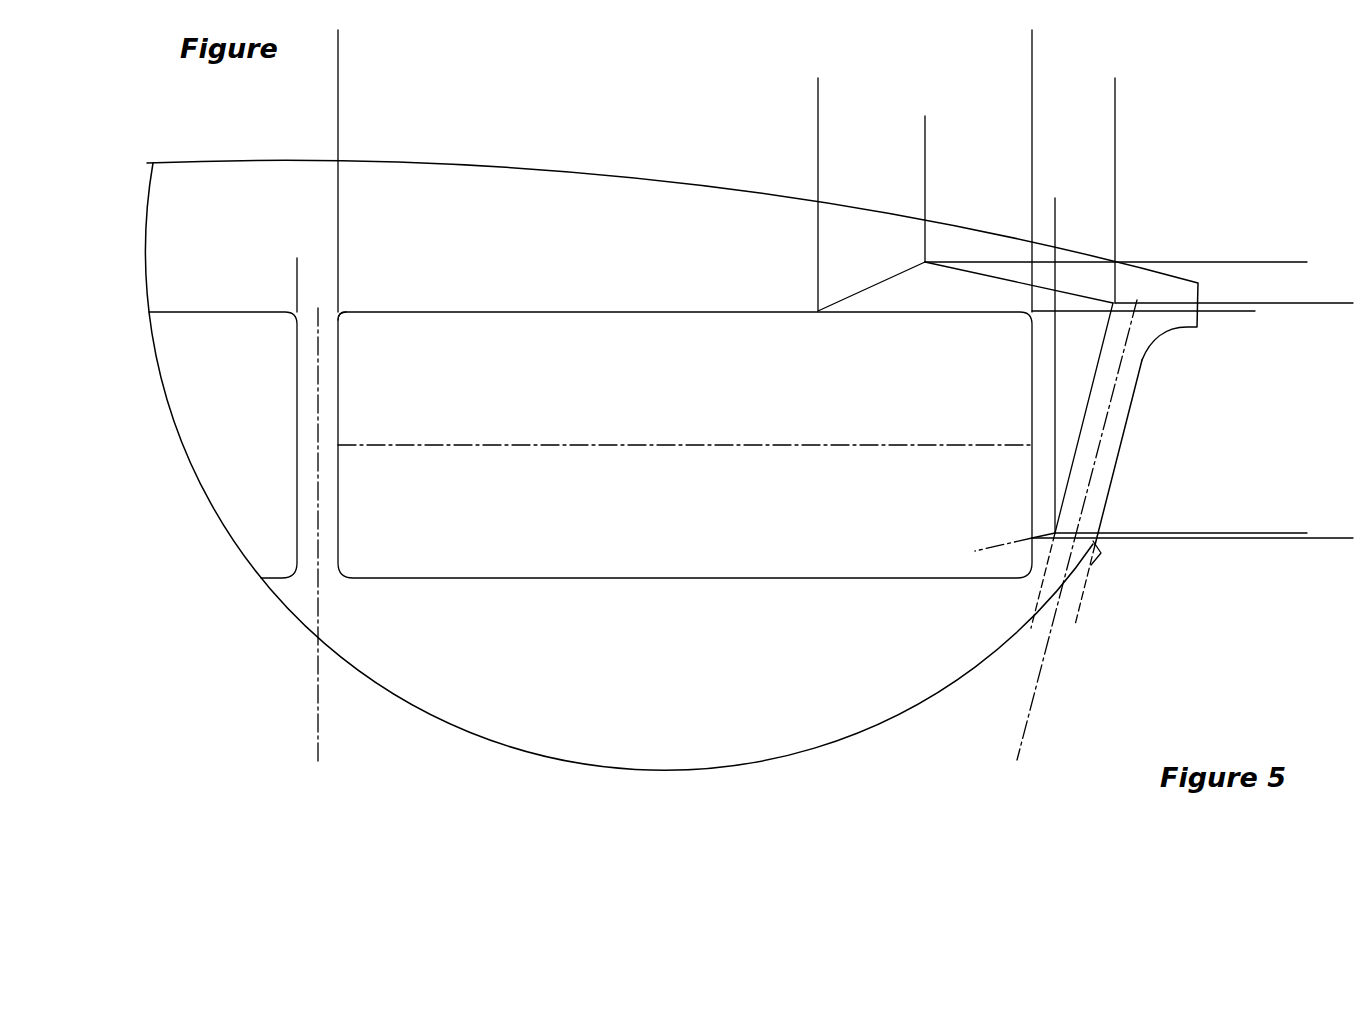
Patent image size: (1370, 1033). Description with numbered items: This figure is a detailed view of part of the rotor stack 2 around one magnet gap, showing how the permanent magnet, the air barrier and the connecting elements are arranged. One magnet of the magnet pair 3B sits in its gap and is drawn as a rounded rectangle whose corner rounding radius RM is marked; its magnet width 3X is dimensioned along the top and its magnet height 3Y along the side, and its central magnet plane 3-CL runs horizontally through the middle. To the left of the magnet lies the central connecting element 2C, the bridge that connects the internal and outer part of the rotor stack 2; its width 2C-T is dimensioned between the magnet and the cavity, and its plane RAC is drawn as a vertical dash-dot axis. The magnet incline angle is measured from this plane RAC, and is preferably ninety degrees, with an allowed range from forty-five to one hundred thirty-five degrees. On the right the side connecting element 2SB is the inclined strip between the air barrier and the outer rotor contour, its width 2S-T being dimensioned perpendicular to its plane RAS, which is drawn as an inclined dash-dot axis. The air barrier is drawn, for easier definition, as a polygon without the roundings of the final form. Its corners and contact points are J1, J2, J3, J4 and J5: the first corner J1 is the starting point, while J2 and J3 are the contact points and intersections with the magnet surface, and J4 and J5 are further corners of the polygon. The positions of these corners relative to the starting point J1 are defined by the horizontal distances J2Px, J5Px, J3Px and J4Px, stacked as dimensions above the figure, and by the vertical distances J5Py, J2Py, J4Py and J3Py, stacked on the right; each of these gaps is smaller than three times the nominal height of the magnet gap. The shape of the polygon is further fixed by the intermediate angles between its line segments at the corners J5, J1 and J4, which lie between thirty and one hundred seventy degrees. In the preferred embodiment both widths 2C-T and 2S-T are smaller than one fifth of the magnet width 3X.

The rotor stack 2 is at (190, 253).
The central connecting element 2C is at (297, 450).
The side connecting element 2SB is at (1122, 420).
The width of the central connecting element 2C-T is at (372, 268).
The width of the side connecting element 2S-T is at (1002, 604).
The magnet pair 3B is at (410, 487).
The magnet width 3X is at (1032, 38).
The magnet height 3Y is at (540, 312).
The central magnet plane 3-CL is at (775, 447).
The plane of the central connecting element RAC is at (318, 748).
The plane of the side connecting element RAS is at (1025, 730).
The radius of the magnet corner rounding RM is at (341, 314).
The first corner J1 is at (1108, 306).
The corner J2 is at (820, 314).
The corner J3 is at (1030, 534).
The contact point J4 is at (1053, 529).
The contact point J5 is at (925, 266).
The distance of contact point J2 in X direction J2Px is at (1115, 85).
The distance of contact point J5 in X direction J5Px is at (1115, 123).
The distance of contact point J3 in X direction J3Px is at (1150, 160).
The distance of contact point J4 in X direction J4Px is at (1150, 205).
The distance of contact point J5 in Y direction J5Py is at (1302, 303).
The distance of contact point J2 in Y direction J2Py is at (1250, 267).
The distance of contact point J4 in Y direction J4Py is at (1302, 533).
The distance of contact point J3 in Y direction J3Py is at (1348, 303).